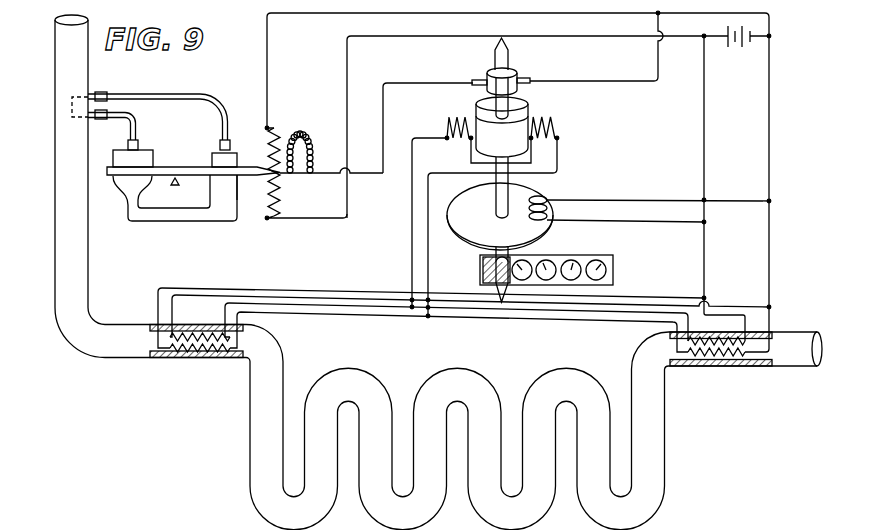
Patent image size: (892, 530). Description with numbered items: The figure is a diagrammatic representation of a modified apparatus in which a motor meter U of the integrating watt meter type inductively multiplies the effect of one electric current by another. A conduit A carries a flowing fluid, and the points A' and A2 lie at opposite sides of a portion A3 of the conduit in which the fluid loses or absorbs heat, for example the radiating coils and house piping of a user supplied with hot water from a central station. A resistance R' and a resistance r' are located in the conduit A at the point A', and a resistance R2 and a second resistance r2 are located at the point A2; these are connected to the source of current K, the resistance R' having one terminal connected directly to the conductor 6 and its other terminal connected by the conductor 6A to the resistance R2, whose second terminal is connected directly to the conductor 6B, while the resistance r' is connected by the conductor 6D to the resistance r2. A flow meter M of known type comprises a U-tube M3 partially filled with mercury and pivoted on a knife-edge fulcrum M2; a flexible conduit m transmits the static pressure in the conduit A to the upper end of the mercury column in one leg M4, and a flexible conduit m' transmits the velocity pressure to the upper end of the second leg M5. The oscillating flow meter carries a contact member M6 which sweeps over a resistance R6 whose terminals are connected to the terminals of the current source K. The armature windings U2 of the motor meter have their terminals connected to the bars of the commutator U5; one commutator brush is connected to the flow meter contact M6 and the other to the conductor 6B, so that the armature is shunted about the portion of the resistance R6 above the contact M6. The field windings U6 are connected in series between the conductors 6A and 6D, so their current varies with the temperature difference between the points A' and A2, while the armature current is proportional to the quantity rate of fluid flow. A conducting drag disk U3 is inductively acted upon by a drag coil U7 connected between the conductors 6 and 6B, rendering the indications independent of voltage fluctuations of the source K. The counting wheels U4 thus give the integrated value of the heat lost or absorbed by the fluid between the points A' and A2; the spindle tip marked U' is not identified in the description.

The conduit A is at (438, 272).
The point in conduit A' is at (147, 378).
The point in conduit A2 is at (741, 367).
The portion of conduit A3 is at (457, 389).
The resistance R' is at (459, 342).
The resistance r' is at (201, 312).
The resistance R2 is at (711, 366).
The second resistance r2 is at (710, 338).
The resistance R6 is at (273, 136).
The conductor 6 is at (704, 120).
The conductor 6A is at (375, 318).
The conductor 6B is at (769, 120).
The conductor 6D is at (453, 318).
The source of current K is at (558, 115).
The flexible conduit m is at (159, 108).
The flexible conduit m' is at (124, 130).
The flow meter M is at (193, 160).
The knife-edge fulcrum M2 is at (174, 192).
The U-tube M3 is at (164, 222).
The leg of U-tube M4 is at (236, 194).
The second leg of U-tube M5 is at (117, 186).
The contact member M6 is at (274, 170).
The motor meter U is at (519, 195).
The spindle tip U' is at (514, 54).
The armature windings U2 is at (480, 112).
The conducting drag disk U3 is at (500, 216).
The counting wheels U4 is at (571, 260).
The commutator U5 is at (489, 72).
The field windings U6 is at (446, 128).
The drag coil U7 is at (546, 197).